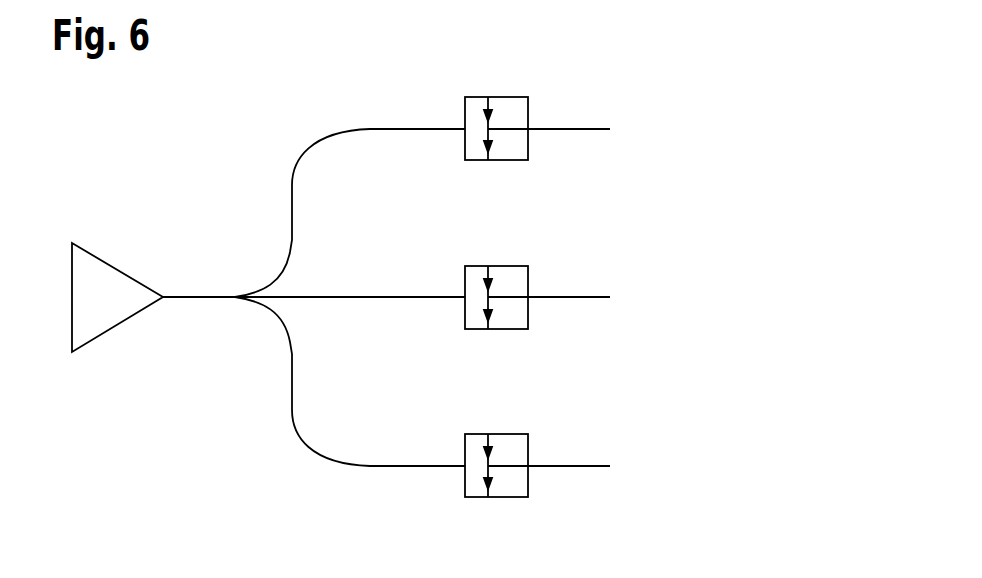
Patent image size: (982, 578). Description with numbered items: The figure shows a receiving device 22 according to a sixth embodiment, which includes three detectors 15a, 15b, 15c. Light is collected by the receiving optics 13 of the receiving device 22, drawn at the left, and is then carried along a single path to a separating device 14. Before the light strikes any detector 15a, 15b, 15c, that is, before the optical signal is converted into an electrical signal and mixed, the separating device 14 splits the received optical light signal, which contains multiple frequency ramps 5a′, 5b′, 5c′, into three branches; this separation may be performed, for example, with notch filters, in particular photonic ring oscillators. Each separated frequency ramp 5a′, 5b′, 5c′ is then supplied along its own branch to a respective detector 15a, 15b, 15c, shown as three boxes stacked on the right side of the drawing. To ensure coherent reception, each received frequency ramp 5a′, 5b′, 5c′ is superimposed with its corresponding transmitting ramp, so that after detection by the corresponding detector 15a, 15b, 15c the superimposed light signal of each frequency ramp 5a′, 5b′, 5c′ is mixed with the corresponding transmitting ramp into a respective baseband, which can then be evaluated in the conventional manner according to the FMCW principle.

The receiving optics 13 is at (111, 262).
The separating device 14 is at (240, 268).
The frequency ramp 5a′ is at (463, 126).
The frequency ramp 5b′ is at (463, 295).
The frequency ramp 5c′ is at (463, 464).
The detector 15a is at (506, 96).
The detector 15b is at (506, 265).
The detector 15c is at (506, 433).
The receiving device 22 is at (672, 234).